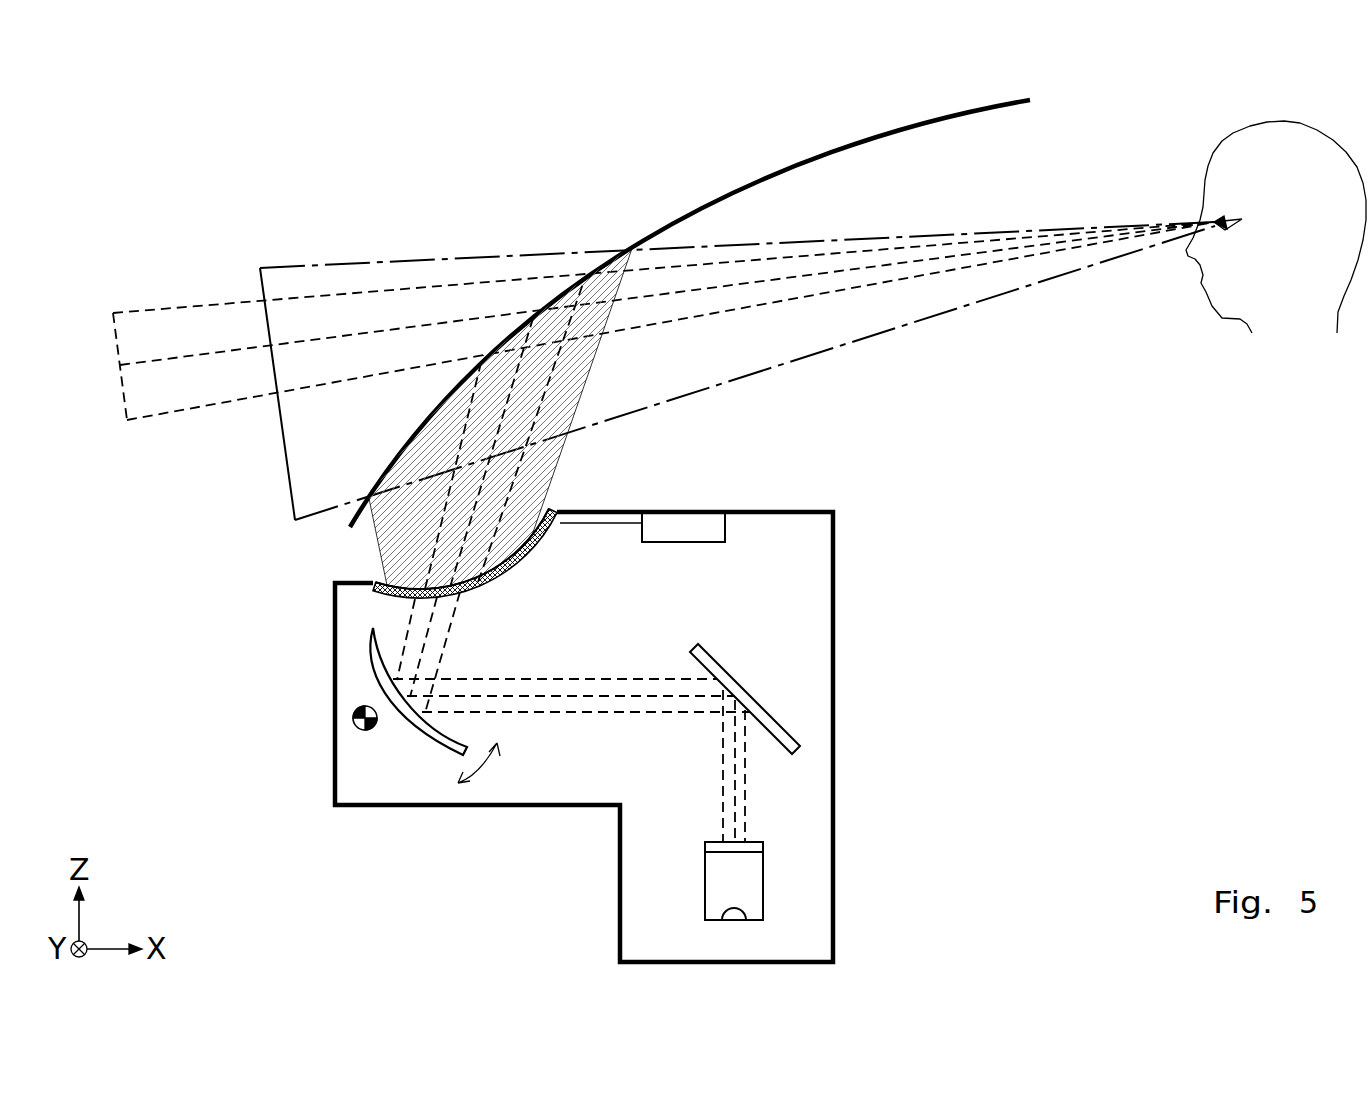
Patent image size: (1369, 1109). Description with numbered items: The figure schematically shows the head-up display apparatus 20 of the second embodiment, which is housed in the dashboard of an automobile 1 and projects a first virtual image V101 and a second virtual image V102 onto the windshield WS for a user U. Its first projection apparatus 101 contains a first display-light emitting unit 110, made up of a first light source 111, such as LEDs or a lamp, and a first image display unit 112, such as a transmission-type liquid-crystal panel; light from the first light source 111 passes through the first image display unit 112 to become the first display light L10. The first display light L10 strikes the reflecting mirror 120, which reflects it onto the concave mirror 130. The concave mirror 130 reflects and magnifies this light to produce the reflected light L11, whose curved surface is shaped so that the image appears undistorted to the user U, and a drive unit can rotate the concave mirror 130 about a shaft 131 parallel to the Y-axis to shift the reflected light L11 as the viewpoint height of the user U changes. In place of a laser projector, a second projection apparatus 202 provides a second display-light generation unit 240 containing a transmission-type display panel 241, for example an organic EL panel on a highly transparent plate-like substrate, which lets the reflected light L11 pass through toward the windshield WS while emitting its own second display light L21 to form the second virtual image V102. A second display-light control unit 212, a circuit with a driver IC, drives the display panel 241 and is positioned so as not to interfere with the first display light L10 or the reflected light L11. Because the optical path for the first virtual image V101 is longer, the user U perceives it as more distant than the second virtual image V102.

The automobile 1 is at (616, 168).
The windshield WS is at (723, 197).
The user U is at (1233, 137).
The first virtual image V101 is at (113, 414).
The second virtual image V102 is at (290, 500).
The second display light L21 is at (548, 468).
The reflected light L11 is at (392, 563).
The head-up display apparatus 20 is at (835, 592).
The second display-light generation unit 240 is at (372, 586).
The transmission-type display panel 241 is at (372, 594).
The second projection apparatus 202 is at (630, 550).
The second display-light control unit 212 is at (726, 546).
The first projection apparatus 101 is at (346, 693).
The shaft 131 is at (353, 720).
The concave mirror 130 is at (425, 740).
The reflecting mirror 120 is at (744, 690).
The first display light L10 is at (752, 790).
The first display-light emitting unit 110 is at (765, 881).
The first image display unit 112 is at (705, 851).
The first light source 111 is at (722, 912).